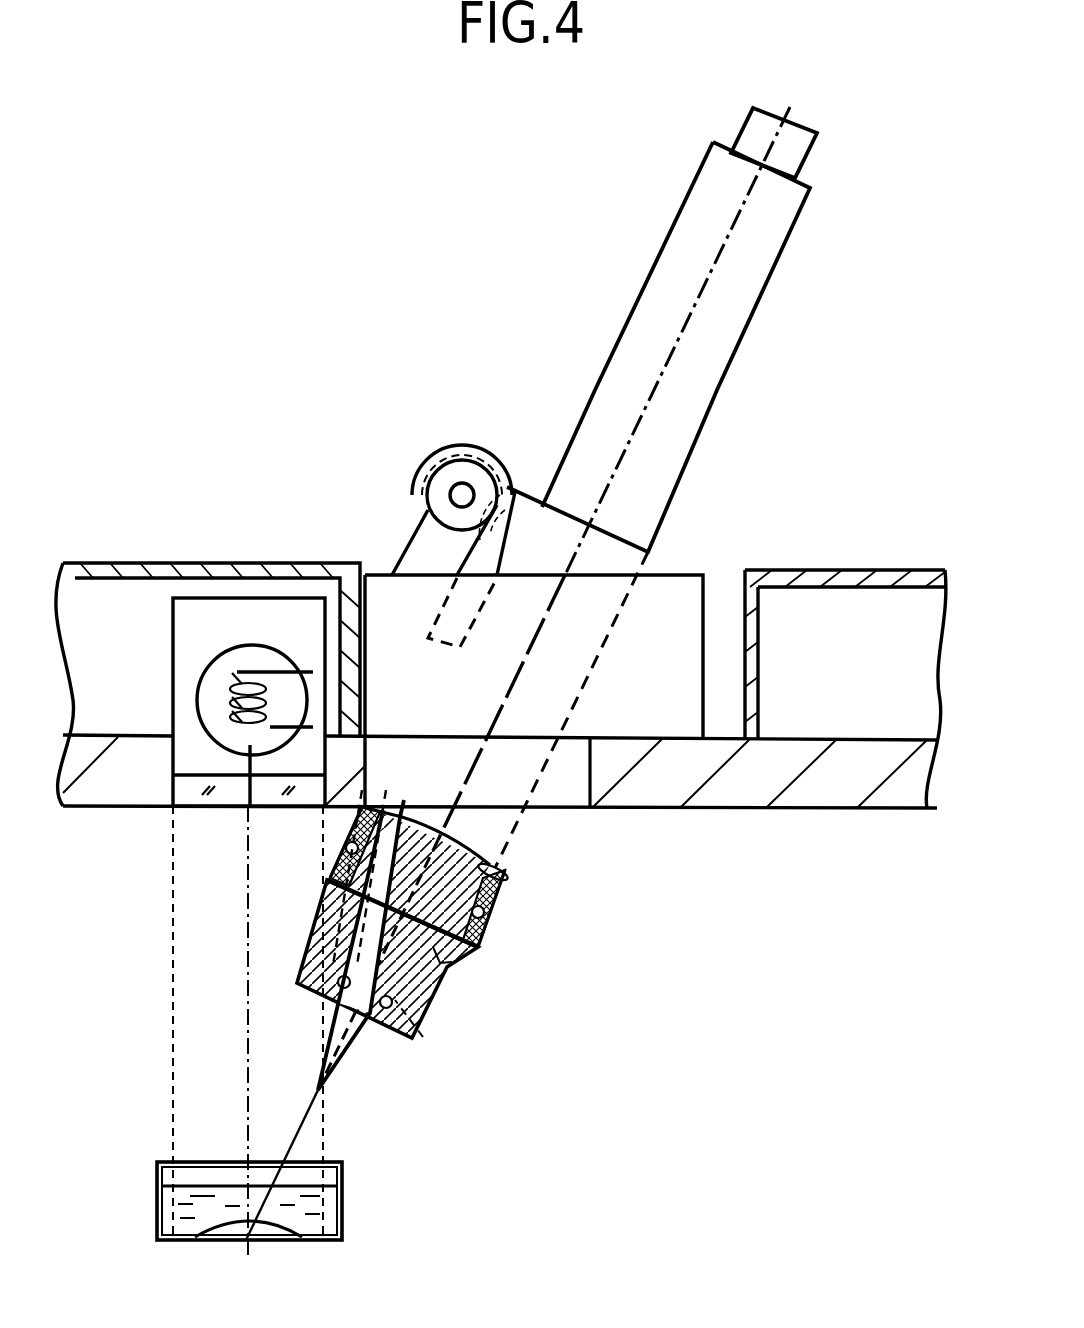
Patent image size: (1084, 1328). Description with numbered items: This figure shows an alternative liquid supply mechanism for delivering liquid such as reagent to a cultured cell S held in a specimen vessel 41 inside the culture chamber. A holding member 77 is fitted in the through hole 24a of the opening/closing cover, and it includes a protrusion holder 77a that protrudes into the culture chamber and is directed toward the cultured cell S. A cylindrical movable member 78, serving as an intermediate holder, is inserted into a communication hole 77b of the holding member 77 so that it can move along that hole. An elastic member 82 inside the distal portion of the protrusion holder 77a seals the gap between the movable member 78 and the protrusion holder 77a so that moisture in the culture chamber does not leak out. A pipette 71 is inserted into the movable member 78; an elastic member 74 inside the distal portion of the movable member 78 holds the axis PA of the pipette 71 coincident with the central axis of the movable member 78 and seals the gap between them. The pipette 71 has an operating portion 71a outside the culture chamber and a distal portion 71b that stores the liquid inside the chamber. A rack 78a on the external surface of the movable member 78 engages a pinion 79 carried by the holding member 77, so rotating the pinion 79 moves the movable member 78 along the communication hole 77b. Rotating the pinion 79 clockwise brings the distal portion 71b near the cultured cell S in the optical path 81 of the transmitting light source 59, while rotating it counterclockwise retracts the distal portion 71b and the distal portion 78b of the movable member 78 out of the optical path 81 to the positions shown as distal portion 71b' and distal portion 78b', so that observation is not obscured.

The through hole 24a is at (593, 770).
The specimen vessel 41 is at (342, 1197).
The transmitting light source 59 is at (173, 750).
The pipette 71 is at (648, 313).
The operating portion 71a is at (792, 152).
The distal portion 71b is at (373, 972).
The distal portion 71b' is at (428, 945).
The elastic member 74 is at (410, 1005).
The holding member 77 is at (567, 790).
The protrusion holder 77a is at (500, 883).
The communication hole 77b is at (503, 877).
The movable member 78 is at (445, 968).
The rack 78a is at (525, 490).
The distal portion 78b is at (416, 996).
The distal portion 78b' is at (540, 1012).
The pinion 79 is at (430, 472).
The optical path 81 is at (175, 977).
The elastic member 82 is at (490, 920).
The axis of the pipette PA is at (713, 272).
The cultured cell S is at (185, 1208).